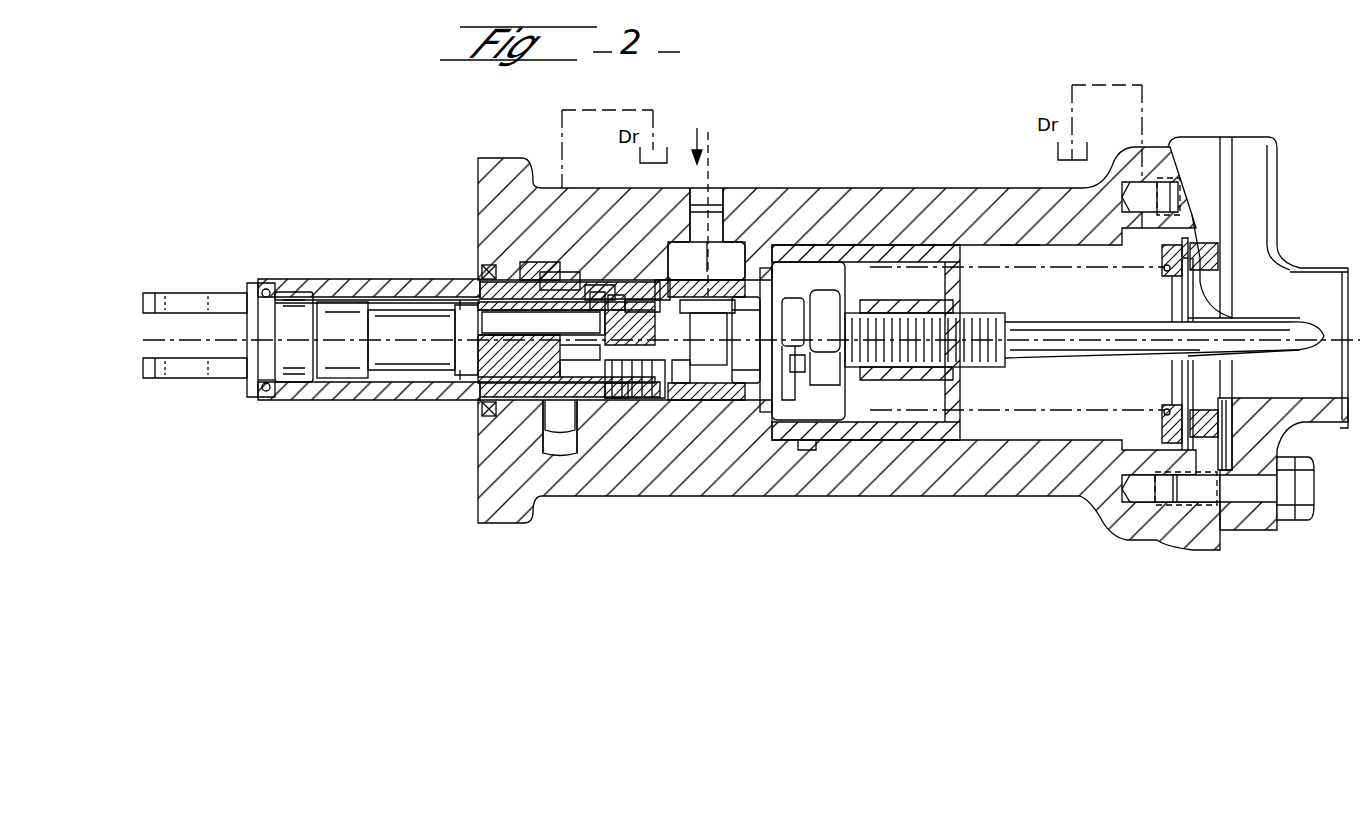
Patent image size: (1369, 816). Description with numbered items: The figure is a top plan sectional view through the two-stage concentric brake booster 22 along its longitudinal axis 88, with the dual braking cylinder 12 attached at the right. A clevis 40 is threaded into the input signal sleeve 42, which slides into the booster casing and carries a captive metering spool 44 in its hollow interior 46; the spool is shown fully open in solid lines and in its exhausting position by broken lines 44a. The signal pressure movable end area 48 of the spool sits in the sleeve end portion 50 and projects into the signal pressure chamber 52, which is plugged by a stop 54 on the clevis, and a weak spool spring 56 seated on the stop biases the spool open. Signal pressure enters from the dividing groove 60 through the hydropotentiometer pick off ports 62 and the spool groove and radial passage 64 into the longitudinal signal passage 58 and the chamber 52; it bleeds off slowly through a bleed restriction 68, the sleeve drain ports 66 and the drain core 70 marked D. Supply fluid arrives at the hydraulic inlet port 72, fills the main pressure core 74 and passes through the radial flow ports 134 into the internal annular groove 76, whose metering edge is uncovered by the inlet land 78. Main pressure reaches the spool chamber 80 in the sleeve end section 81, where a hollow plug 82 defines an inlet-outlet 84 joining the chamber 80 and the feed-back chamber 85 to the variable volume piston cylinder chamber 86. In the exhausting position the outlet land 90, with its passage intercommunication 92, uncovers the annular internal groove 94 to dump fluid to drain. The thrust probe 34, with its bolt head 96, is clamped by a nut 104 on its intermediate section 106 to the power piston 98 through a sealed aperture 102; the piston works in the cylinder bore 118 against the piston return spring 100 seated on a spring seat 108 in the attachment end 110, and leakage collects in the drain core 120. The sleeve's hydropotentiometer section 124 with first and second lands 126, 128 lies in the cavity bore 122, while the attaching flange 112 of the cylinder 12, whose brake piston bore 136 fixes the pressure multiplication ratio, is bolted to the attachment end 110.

The dual braking cylinder 12 is at (1345, 420).
The two-stage concentric brake booster 22 is at (800, 188).
The thrust probe 34 is at (1082, 334).
The clevis 40 is at (215, 300).
The input signal sleeve 42 is at (264, 290).
The metering spool 44 is at (482, 404).
The broken-line spool position 44a is at (452, 394).
The hollow interior of sleeve 46 is at (660, 392).
The signal pressure movable end area 48 is at (460, 350).
The end portion of sleeve 50 is at (462, 283).
The signal pressure chamber 52 is at (410, 298).
The stop 54 is at (372, 350).
The spool spring 56 is at (372, 394).
The longitudinal signal passage 58 is at (462, 318).
The dividing groove 60 is at (600, 292).
The hydropotentiometer pick off ports 62 is at (612, 293).
The spool groove and radial passage 64 is at (630, 300).
The sleeve drain ports 66 is at (516, 280).
The bleed restriction 68 is at (540, 313).
The drain core 70 is at (556, 458).
The hydraulic inlet port 72 is at (722, 195).
The main pressure core 74 is at (720, 290).
The internal annular groove 76 is at (690, 292).
The inlet land 78 is at (700, 394).
The spool chamber 80 is at (720, 360).
The end section of sleeve 81 is at (756, 280).
The plug 82 is at (794, 288).
The inlet-outlet 84 is at (798, 362).
The sleeve feed-back chamber 85 is at (742, 392).
The piston cylinder chamber 86 is at (806, 452).
The longitudinal axis 88 is at (166, 304).
The spool outlet land 90 is at (566, 388).
The longitudinal passage intercommunication 92 is at (707, 319).
The annular internal groove 94 is at (555, 360).
The bolt head 96 is at (840, 302).
The power piston 98 is at (856, 248).
The piston return spring 100 is at (1167, 270).
The sealed aperture 102 is at (875, 372).
The nut 104 is at (966, 313).
The intermediate section of probe 106 is at (1164, 325).
The spring seat 108 is at (1162, 426).
The attachment end 110 is at (1197, 550).
The attaching flange 112 is at (1258, 533).
The cylinder bore 118 is at (1016, 246).
The drain core 120 is at (1124, 200).
The cavity bore 122 is at (603, 285).
The hydropotentiometer section 124 is at (552, 274).
The first land 126 is at (538, 262).
The second land 128 is at (660, 280).
The radial flow ports 134 is at (690, 404).
The brake piston bore 136 is at (1313, 398).